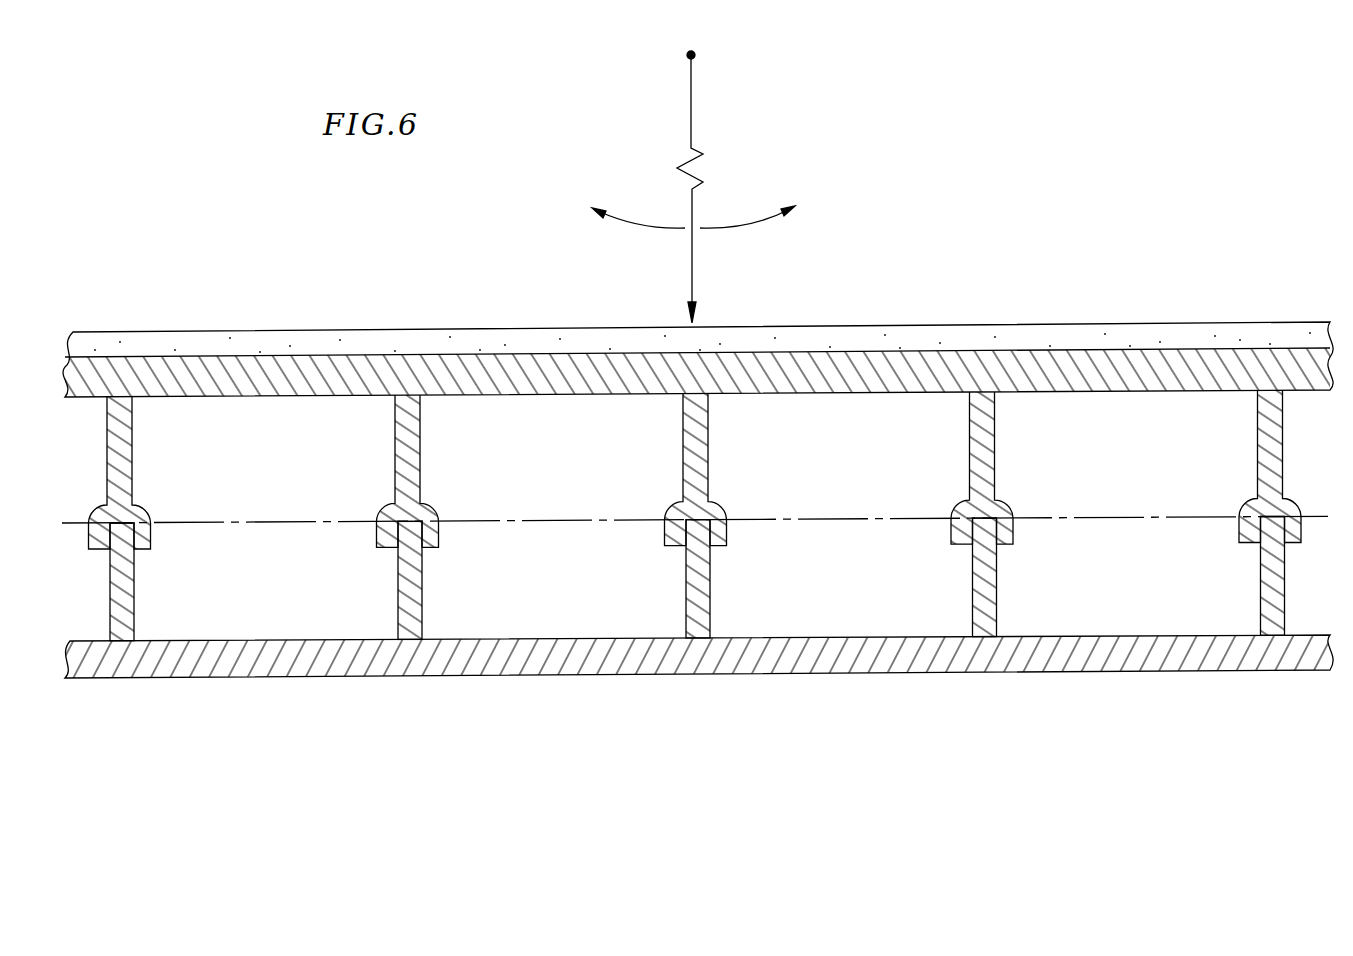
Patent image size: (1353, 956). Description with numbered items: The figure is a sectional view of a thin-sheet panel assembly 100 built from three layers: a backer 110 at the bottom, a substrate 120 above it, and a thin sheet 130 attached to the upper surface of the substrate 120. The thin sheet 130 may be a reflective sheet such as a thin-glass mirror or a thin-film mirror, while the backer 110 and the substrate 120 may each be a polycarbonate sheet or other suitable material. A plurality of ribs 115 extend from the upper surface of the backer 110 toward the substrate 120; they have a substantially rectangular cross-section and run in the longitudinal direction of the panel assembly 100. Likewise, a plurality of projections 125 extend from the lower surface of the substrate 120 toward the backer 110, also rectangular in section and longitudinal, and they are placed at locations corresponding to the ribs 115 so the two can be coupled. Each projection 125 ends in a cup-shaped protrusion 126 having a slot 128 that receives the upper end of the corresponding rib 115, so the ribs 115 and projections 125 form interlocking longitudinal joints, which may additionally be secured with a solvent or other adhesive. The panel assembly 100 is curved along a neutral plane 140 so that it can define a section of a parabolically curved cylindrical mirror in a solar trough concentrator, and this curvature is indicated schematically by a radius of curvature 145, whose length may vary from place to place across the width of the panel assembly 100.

The thin-sheet panel assembly 100 is at (1107, 252).
The backer 110 is at (1193, 652).
The ribs 115 is at (1268, 582).
The substrate 120 is at (945, 372).
The projections 125 is at (1265, 452).
The cup-shaped protrusion 126 is at (140, 508).
The slot 128 is at (114, 535).
The thin sheet 130 is at (1095, 335).
The neutral plane 140 is at (1317, 515).
The radius of curvature 145 is at (694, 100).